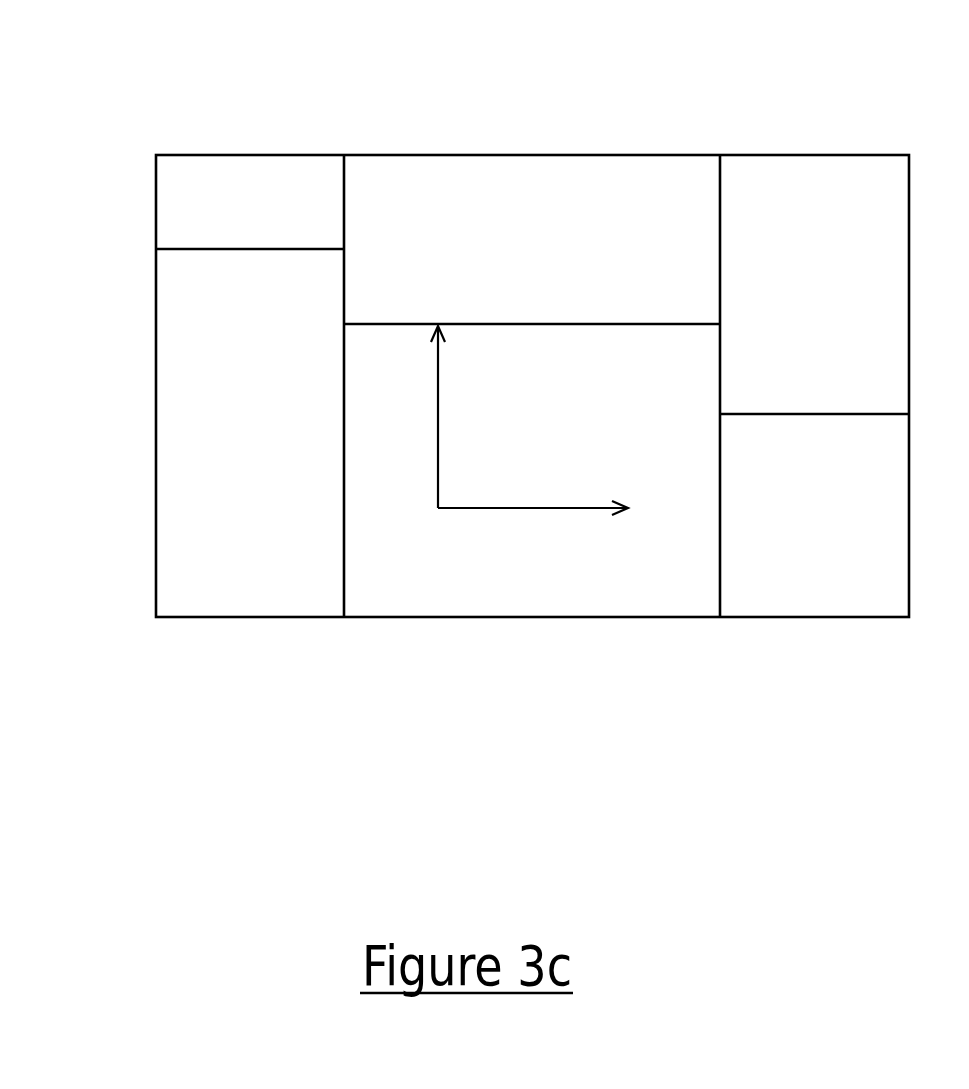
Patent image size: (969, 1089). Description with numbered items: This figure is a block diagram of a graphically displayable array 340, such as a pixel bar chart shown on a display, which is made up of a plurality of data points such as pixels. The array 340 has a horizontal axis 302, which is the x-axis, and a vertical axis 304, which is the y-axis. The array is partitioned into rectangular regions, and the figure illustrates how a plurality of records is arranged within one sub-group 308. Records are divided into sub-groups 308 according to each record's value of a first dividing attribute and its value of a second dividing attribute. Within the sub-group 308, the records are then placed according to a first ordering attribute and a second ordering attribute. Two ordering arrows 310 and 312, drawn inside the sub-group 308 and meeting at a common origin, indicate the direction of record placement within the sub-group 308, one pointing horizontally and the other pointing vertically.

The graphically displayable array 340 is at (73, 72).
The horizontal axis 302 is at (540, 617).
The vertical axis 304 is at (155, 391).
The sub-group 308 is at (660, 585).
The ordering arrow 310 is at (508, 508).
The ordering arrow 312 is at (438, 430).